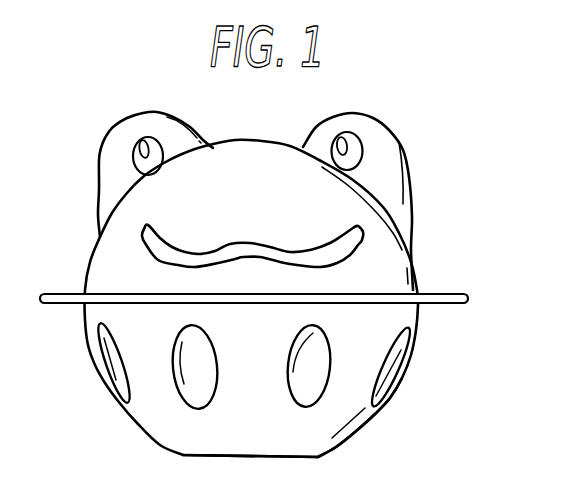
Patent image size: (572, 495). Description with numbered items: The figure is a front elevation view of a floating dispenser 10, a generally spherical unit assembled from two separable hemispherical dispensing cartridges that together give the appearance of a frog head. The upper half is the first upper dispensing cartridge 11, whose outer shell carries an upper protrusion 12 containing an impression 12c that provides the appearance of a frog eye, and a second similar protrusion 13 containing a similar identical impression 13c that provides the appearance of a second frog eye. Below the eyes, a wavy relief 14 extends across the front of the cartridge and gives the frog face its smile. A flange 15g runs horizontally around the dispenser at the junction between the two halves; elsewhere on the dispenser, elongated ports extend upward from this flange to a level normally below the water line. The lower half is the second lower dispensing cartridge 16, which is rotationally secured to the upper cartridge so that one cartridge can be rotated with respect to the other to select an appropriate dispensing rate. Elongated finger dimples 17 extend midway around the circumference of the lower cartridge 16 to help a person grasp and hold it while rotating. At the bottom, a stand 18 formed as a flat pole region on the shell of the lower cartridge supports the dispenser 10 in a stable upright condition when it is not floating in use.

The dispenser 10 is at (293, 276).
The first upper dispensing cartridge 11 is at (272, 157).
The upper protrusion 12 is at (401, 183).
The impression 12c is at (358, 150).
The second protrusion 13 is at (120, 147).
The impression 13c is at (141, 153).
The wavy relief 14 is at (342, 257).
The flange 15g is at (467, 294).
The second lower dispensing cartridge 16 is at (366, 422).
The elongated finger dimples 17 is at (298, 390).
The stand 18 is at (262, 457).